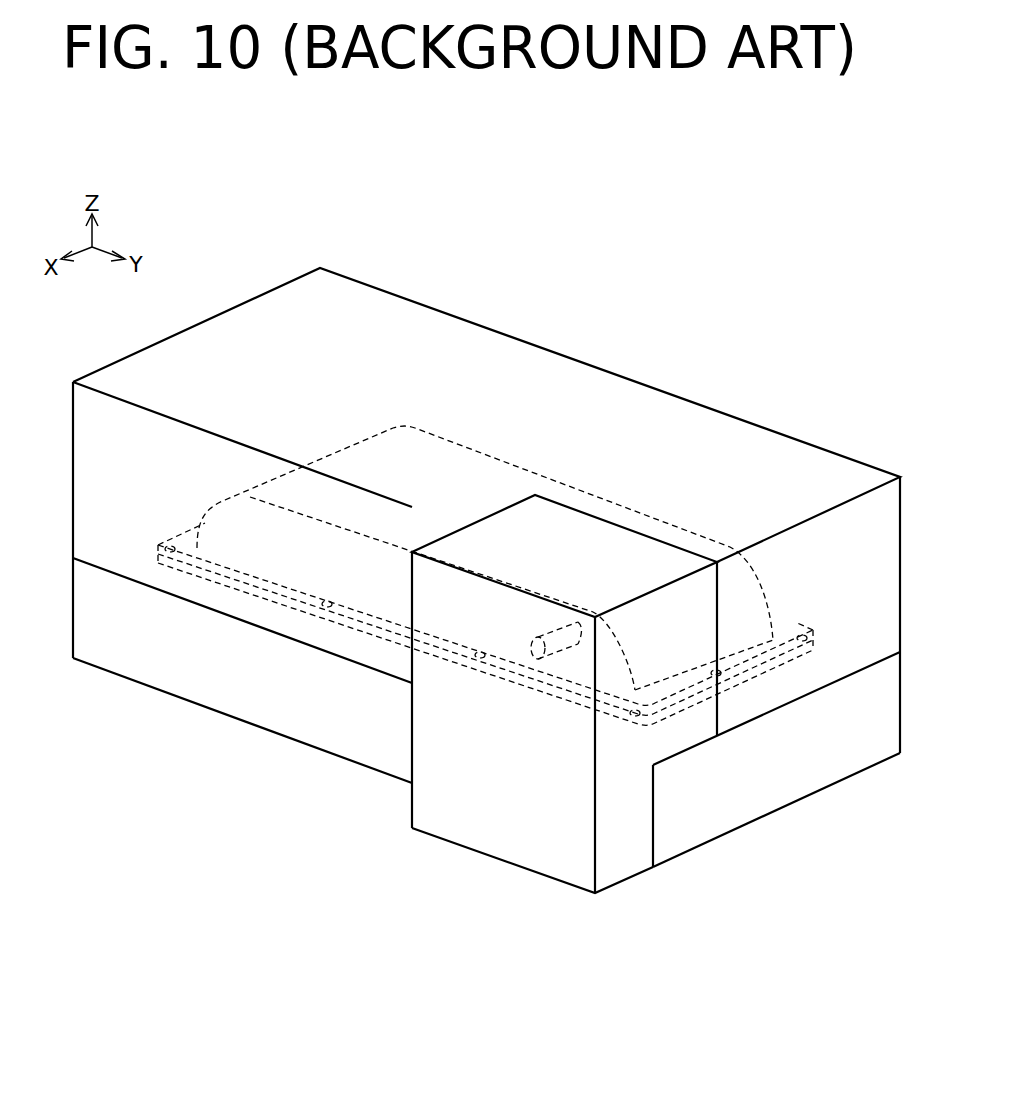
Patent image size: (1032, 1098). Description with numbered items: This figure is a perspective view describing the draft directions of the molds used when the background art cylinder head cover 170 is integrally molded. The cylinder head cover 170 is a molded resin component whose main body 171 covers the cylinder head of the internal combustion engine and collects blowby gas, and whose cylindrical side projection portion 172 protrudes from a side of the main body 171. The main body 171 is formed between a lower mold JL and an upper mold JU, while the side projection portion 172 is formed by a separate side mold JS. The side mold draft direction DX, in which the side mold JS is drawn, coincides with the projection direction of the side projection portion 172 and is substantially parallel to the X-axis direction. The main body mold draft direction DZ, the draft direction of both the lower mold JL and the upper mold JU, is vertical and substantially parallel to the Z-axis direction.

The upper mold JU is at (138, 500).
The lower mold JL is at (195, 658).
The side mold JS is at (538, 828).
The cylinder head cover 170 is at (805, 893).
The main body 171 is at (773, 620).
The side projection portion 172 is at (745, 628).
The main body mold draft direction DZ is at (471, 423).
The side mold draft direction DX is at (530, 785).